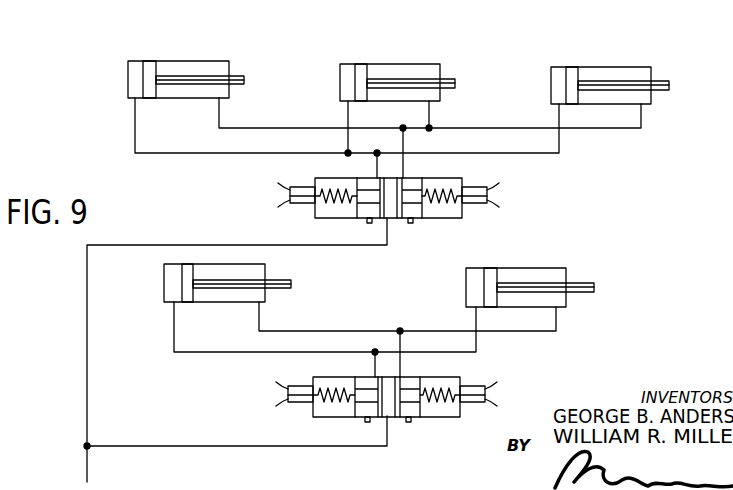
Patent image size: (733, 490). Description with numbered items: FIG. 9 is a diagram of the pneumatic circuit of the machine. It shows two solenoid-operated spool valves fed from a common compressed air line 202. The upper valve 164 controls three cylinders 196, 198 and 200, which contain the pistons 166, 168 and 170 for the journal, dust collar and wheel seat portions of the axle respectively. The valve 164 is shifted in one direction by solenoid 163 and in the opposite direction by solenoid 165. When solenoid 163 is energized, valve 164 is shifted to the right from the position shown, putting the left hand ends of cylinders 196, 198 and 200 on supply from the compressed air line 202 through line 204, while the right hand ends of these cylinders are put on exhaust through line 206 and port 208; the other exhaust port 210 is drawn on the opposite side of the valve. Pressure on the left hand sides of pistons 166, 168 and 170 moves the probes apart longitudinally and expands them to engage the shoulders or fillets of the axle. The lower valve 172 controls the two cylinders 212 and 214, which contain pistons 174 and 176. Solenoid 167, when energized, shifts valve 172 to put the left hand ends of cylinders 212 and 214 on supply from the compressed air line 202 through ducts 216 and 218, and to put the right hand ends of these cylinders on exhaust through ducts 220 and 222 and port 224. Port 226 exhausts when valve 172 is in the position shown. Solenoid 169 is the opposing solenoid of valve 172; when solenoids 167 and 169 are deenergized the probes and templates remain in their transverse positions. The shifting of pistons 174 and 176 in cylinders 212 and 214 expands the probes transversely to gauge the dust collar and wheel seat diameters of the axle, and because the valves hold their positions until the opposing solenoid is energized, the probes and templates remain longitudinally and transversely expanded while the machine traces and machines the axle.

The solenoid 163 is at (478, 188).
The valve 164 is at (413, 190).
The solenoid 165 is at (300, 188).
The piston 166 is at (150, 66).
The solenoid 167 is at (480, 388).
The piston 168 is at (362, 70).
The solenoid 169 is at (298, 388).
The piston 170 is at (574, 72).
The valve 172 is at (415, 390).
The piston 174 is at (194, 272).
The piston 176 is at (492, 272).
The cylinder 196 is at (208, 64).
The cylinder 198 is at (424, 67).
The cylinder 200 is at (634, 70).
The compressed air line 202 is at (88, 365).
The line 204 is at (135, 120).
The line 206 is at (221, 118).
The port 208 is at (411, 223).
The valve port 210 is at (370, 223).
The cylinder 212 is at (256, 266).
The cylinder 214 is at (553, 268).
The duct 216 is at (262, 447).
The duct 218 is at (232, 350).
The duct 220 is at (384, 328).
The duct 222 is at (402, 346).
The port 224 is at (410, 422).
The port 226 is at (366, 422).